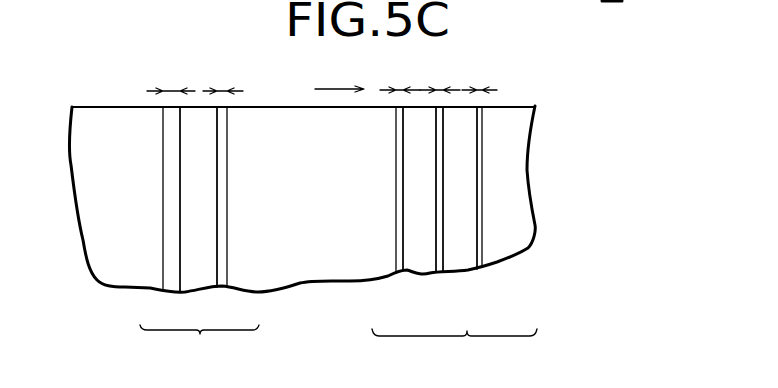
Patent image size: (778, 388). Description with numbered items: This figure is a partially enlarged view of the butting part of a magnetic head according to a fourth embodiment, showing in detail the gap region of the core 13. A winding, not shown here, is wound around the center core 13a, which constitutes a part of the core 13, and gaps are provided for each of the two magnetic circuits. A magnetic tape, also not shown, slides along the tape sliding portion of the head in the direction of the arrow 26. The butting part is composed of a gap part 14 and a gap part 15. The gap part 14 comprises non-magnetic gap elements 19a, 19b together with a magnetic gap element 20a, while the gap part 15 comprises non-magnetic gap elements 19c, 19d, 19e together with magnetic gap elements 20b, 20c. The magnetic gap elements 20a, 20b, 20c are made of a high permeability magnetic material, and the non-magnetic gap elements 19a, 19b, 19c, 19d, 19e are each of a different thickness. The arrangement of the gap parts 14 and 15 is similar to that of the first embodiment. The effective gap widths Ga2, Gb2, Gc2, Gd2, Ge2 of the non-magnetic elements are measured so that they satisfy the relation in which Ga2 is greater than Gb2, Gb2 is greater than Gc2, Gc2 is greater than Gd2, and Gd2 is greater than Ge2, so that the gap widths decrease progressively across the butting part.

The core 13 is at (83, 169).
The center core 13a is at (273, 114).
The gap part 14 is at (219, 364).
The gap part 15 is at (480, 361).
The non-magnetic gap element 19a is at (165, 293).
The non-magnetic gap element 19b is at (222, 289).
The non-magnetic gap element 19c is at (393, 274).
The non-magnetic gap element 19d is at (441, 268).
The non-magnetic gap element 19e is at (483, 262).
The magnetic gap element 20a is at (198, 279).
The magnetic gap element 20b is at (419, 263).
The magnetic gap element 20c is at (473, 266).
The arrow 26 is at (340, 89).
The effective gap width Ga2 is at (171, 77).
The effective gap width Gb2 is at (222, 77).
The effective gap width Gc2 is at (400, 77).
The effective gap width Gd2 is at (444, 77).
The effective gap width Ge2 is at (492, 77).